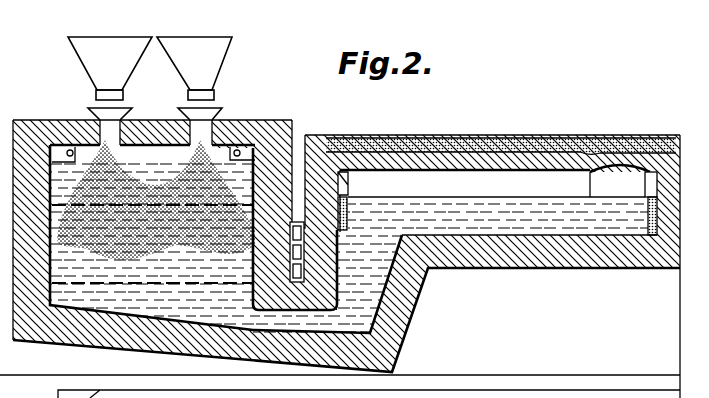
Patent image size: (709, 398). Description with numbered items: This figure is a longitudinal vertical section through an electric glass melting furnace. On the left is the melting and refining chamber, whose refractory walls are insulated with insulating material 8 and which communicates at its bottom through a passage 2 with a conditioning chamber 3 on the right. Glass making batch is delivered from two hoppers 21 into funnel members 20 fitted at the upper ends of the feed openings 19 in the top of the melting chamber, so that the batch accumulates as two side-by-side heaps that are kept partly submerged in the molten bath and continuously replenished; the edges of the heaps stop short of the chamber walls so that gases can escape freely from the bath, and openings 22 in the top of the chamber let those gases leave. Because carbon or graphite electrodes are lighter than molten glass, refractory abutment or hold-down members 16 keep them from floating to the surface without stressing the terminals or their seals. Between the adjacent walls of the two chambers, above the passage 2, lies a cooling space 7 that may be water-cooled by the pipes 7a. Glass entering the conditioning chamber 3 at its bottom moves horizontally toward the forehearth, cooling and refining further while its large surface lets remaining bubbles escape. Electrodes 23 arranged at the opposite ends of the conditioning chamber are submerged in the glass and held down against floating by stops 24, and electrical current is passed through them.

The passage 2 is at (408, 327).
The conditioning chamber 3 is at (511, 237).
The cooling space 7 is at (300, 205).
The pipes 7a is at (292, 236).
The insulating material 8 is at (489, 141).
The refractory abutment or hold-down members 16 is at (152, 170).
The feed openings 19 is at (127, 118).
The funnel members 20 is at (88, 110).
The hoppers 21 is at (86, 52).
The openings 22 is at (52, 122).
The electrodes 23 is at (349, 228).
The stops 24 is at (345, 196).